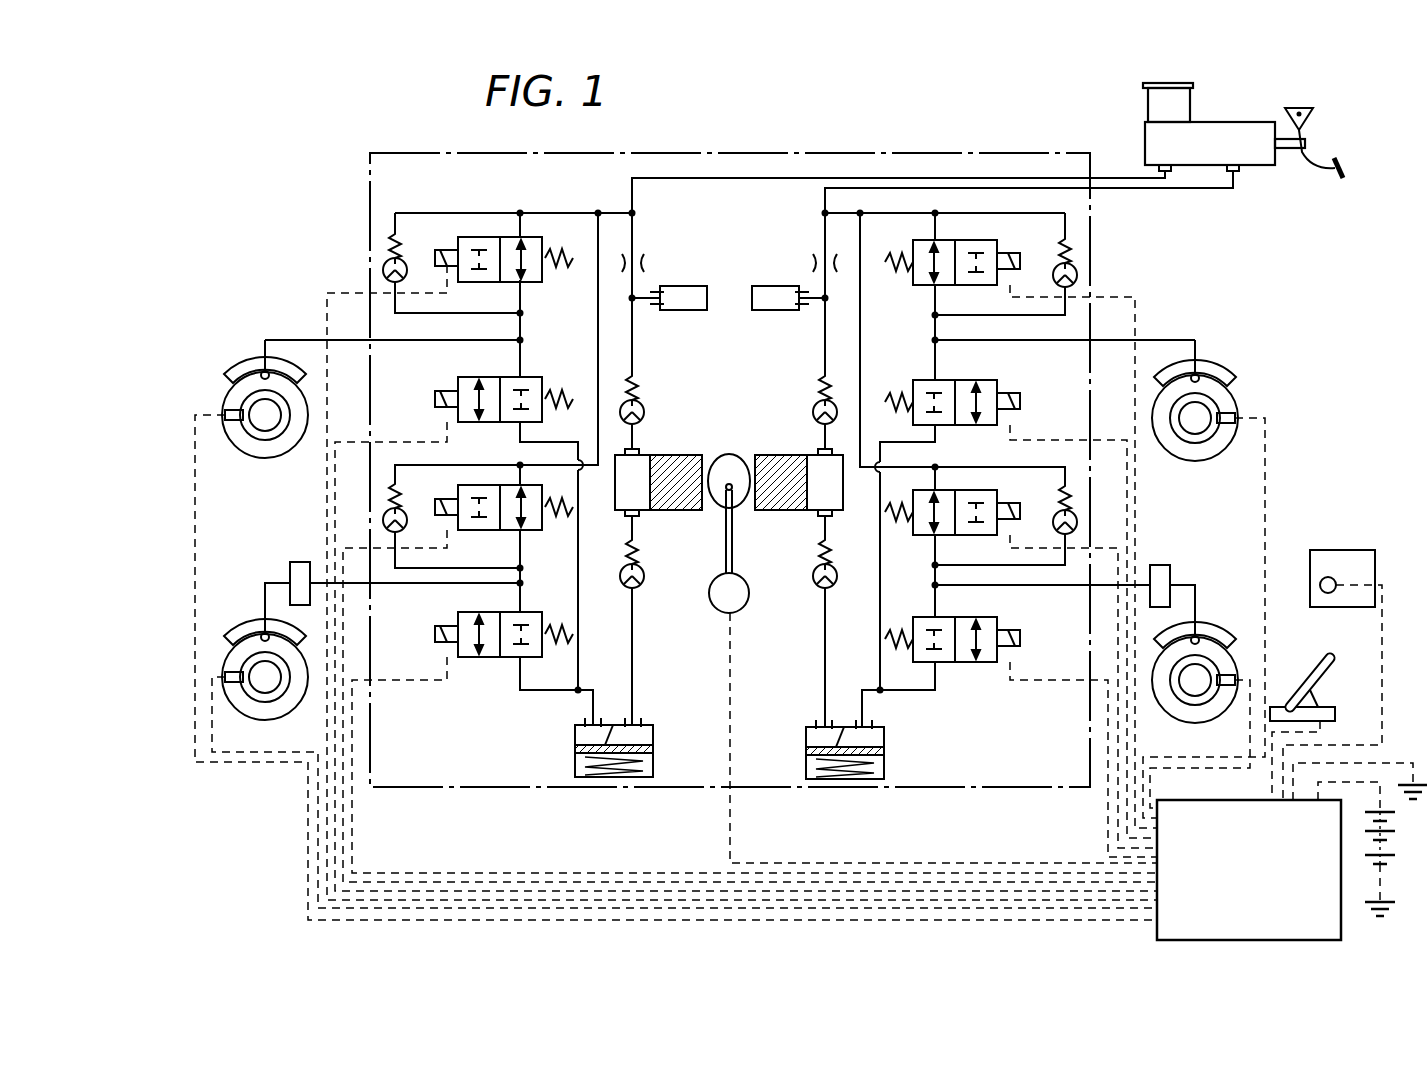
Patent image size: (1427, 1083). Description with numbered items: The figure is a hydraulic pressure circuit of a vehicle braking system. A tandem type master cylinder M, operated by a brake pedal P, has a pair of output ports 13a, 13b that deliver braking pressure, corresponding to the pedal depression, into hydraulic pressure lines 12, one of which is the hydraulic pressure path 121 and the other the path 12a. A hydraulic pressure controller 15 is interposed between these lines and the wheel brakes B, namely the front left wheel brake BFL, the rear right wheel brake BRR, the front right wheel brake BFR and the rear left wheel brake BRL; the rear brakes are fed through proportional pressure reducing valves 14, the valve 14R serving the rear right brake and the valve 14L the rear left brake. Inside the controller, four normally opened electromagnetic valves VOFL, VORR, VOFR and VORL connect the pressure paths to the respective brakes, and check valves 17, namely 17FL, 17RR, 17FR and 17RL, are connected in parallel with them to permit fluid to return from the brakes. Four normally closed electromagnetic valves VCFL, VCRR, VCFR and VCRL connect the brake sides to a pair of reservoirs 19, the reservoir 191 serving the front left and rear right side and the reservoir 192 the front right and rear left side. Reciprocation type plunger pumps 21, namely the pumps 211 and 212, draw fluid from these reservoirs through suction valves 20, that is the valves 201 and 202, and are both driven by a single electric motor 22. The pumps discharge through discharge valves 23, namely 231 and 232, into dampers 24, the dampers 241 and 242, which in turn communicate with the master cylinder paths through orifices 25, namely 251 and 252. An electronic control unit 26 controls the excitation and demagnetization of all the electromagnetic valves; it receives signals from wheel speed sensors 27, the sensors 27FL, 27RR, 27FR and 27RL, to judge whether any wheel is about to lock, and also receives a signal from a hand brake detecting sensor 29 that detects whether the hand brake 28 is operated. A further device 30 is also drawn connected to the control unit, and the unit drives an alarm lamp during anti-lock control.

The hydraulic pressure controller 15 is at (792, 148).
The tandem type master cylinder M is at (1245, 128).
The brake pedal P is at (1346, 158).
The first output port of master cylinder 13a is at (1158, 164).
The second output port of master cylinder 13b is at (1243, 172).
The hydraulic pressure lines 12 is at (1067, 168).
The hydraulic pressure line 121 is at (1012, 176).
The second output hydraulic line 12a is at (1195, 190).
The check valves 17 is at (770, 350).
The check valve 17FL is at (395, 229).
The check valve 17FR is at (1077, 272).
The check valve 17RR is at (395, 479).
The check valve 17RL is at (1058, 516).
The normally opened electromagnetic valve VOFL is at (530, 282).
The normally closed electromagnetic valve VCFL is at (462, 378).
The normally opened electromagnetic valve VORR is at (490, 532).
The normally closed electromagnetic valve VCRR is at (490, 658).
The normally opened electromagnetic valve VOFR is at (915, 287).
The normally closed electromagnetic valve VCFR is at (978, 380).
The normally opened electromagnetic valve VORL is at (925, 537).
The normally closed electromagnetic valve VCRL is at (990, 617).
The orifices 25 is at (729, 232).
The orifice 251 is at (646, 262).
The orifice 252 is at (812, 262).
The dampers 24 is at (728, 292).
The damper 241 is at (686, 310).
The damper 242 is at (772, 286).
The discharge valves 23 is at (728, 381).
The discharge valve 231 is at (645, 407).
The discharge valve 232 is at (815, 405).
The reciprocation type plunger pumps 21 is at (729, 445).
The plunger pump 211 is at (684, 452).
The plunger pump 212 is at (784, 452).
The electric motor 22 is at (742, 582).
The suction valves 20 is at (728, 587).
The suction valve 201 is at (641, 585).
The suction valve 202 is at (818, 585).
The reservoirs 19 is at (689, 753).
The reservoir 191 is at (575, 756).
The reservoir 192 is at (806, 758).
The wheel brakes B is at (742, 516).
The front left wheel brake BFL is at (246, 368).
The front right wheel brake BFR is at (1228, 370).
The rear right wheel brake BRR is at (248, 630).
The rear left wheel brake BRL is at (1218, 636).
The proportional pressure reducing valves 14 is at (720, 557).
The proportional pressure reducing valve 14R is at (295, 562).
The proportional pressure reducing valve 14L is at (1160, 565).
The wheel speed sensors 27 is at (752, 643).
The wheel speed sensor 27FL is at (232, 425).
The wheel speed sensor 27FR is at (1238, 412).
The wheel speed sensor 27RR is at (233, 688).
The wheel speed sensor 27RL is at (1236, 690).
The electronic control unit 26 is at (1249, 870).
The brake switch 30 is at (1345, 550).
The hand brake 28 is at (1322, 660).
The hand brake detecting sensor 29 is at (1318, 700).